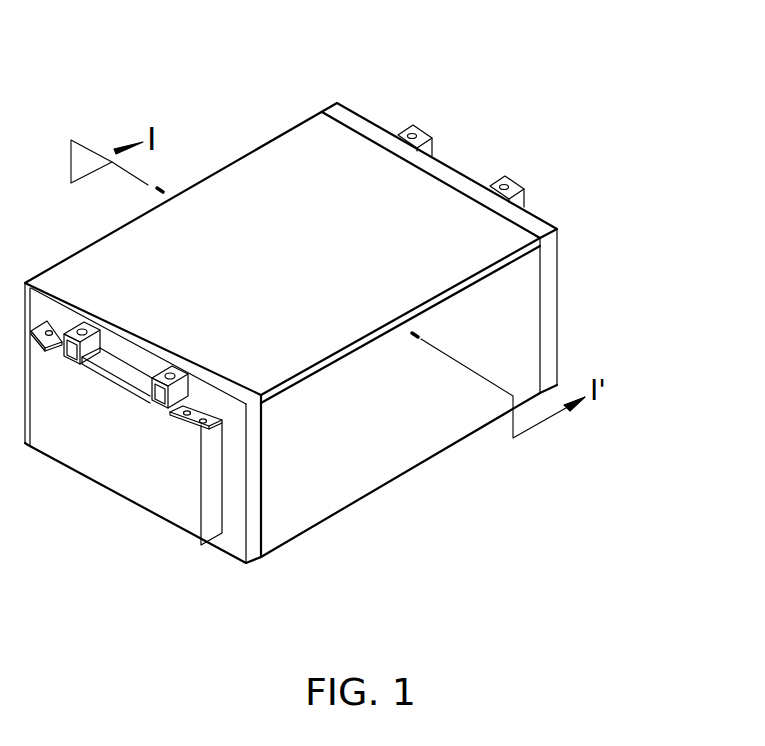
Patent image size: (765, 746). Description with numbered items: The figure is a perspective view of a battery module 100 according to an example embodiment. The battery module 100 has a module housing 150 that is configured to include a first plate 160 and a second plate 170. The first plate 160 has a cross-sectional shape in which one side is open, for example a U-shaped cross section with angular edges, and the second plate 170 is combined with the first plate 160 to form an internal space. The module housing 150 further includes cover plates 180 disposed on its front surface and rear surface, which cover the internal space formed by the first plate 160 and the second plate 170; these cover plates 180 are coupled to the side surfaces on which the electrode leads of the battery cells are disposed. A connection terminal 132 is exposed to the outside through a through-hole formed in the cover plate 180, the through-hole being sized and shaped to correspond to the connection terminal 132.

The battery module 100 is at (216, 35).
The connection terminal 132 is at (185, 418).
The module housing 150 is at (662, 200).
The first plate 160 is at (515, 298).
The second plate 170 is at (505, 236).
The cover plate 180 is at (550, 343).